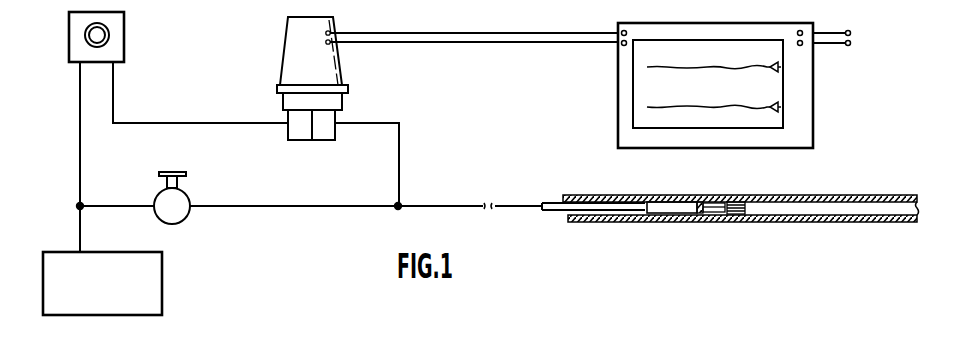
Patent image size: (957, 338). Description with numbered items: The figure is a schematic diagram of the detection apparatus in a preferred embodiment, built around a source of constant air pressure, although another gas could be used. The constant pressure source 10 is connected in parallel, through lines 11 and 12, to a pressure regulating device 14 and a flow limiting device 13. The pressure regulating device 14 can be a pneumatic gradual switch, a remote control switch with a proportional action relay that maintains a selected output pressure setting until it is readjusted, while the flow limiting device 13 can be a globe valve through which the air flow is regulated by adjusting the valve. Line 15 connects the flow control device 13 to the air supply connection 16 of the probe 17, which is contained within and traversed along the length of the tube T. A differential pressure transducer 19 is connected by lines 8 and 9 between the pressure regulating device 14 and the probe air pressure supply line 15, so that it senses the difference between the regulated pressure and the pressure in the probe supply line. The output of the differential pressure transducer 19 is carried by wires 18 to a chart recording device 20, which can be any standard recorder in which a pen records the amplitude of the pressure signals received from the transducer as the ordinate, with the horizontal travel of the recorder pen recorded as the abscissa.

The line 8 is at (187, 123).
The line 9 is at (400, 157).
The constant pressure source 10 is at (163, 288).
The line 11 is at (79, 183).
The line 12 is at (132, 204).
The flow limiting device 13 is at (184, 198).
The pressure regulating device 14 is at (117, 24).
The line 15 is at (340, 205).
The air supply connection 16 is at (637, 222).
The probe 17 is at (682, 212).
The wires 18 is at (513, 32).
The differential pressure transducer 19 is at (295, 58).
The chart recording device 20 is at (713, 32).
The tube T is at (870, 195).